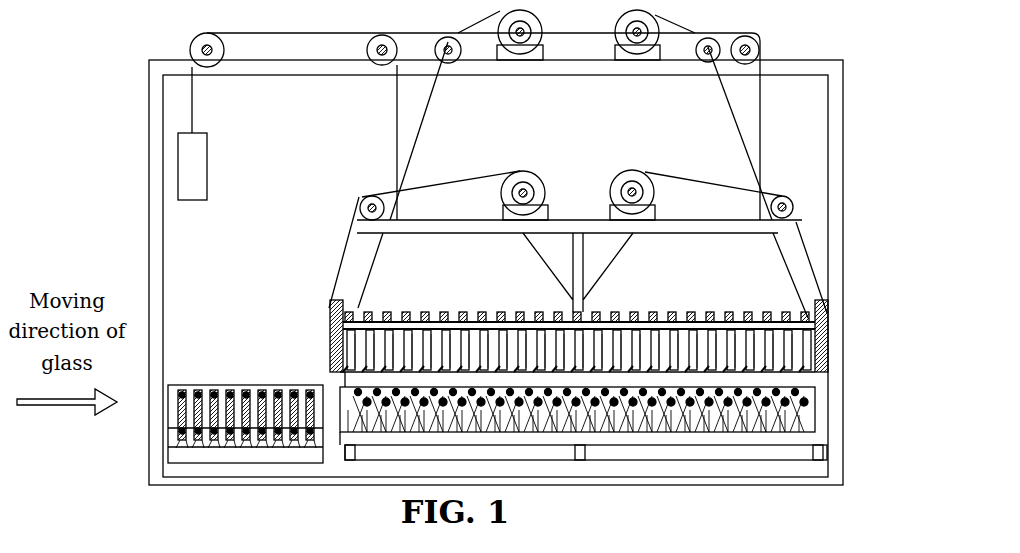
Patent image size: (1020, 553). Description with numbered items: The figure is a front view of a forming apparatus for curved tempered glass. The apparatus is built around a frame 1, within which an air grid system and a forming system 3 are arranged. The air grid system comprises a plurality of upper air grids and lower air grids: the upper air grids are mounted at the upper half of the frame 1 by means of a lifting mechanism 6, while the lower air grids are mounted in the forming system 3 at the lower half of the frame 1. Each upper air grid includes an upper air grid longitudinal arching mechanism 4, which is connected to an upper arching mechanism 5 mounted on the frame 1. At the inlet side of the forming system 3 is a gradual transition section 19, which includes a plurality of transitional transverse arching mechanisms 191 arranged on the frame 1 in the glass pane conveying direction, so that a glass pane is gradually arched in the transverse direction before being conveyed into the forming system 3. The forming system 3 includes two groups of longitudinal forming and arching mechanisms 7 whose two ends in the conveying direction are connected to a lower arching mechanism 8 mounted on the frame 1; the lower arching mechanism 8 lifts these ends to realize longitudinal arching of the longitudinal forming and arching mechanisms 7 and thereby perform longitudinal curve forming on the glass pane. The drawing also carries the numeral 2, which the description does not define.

The frame 1 is at (843, 150).
The glass clamping fingers 2 is at (783, 363).
The forming system 3 is at (800, 390).
The upper air grid longitudinal arching mechanism 4 is at (773, 313).
The upper arching mechanism 5 is at (779, 326).
The lifting mechanism 6 is at (802, 222).
The longitudinal forming and arching mechanisms 7 is at (803, 417).
The lower arching mechanism 8 is at (787, 272).
The gradual transition section 19 is at (250, 383).
The transitional transverse arching mechanisms 191 is at (228, 383).